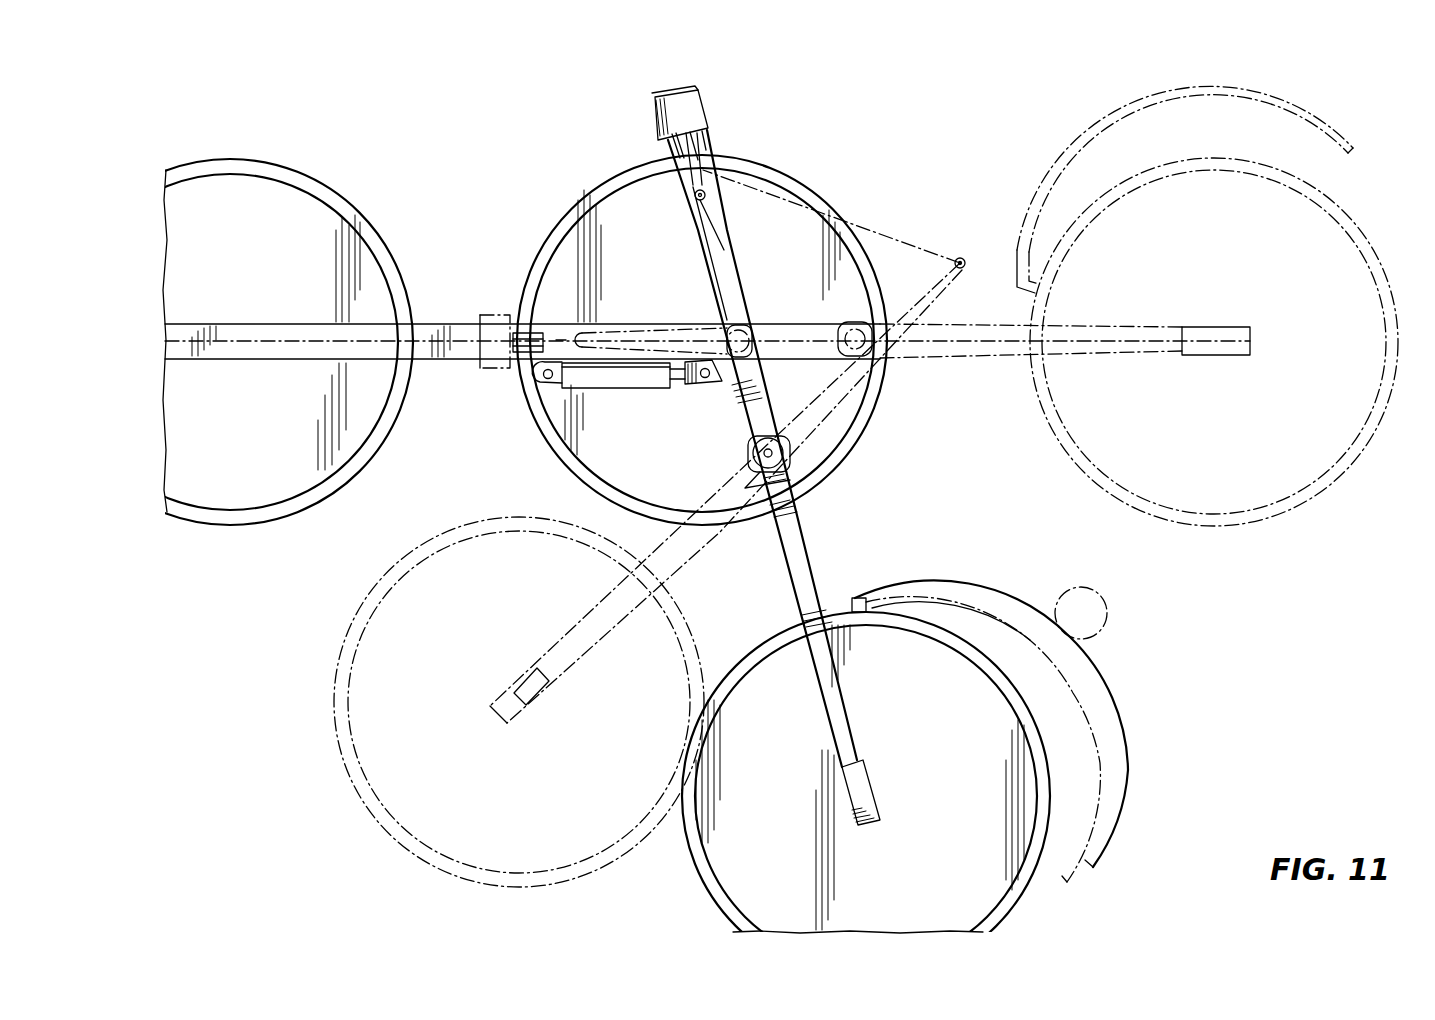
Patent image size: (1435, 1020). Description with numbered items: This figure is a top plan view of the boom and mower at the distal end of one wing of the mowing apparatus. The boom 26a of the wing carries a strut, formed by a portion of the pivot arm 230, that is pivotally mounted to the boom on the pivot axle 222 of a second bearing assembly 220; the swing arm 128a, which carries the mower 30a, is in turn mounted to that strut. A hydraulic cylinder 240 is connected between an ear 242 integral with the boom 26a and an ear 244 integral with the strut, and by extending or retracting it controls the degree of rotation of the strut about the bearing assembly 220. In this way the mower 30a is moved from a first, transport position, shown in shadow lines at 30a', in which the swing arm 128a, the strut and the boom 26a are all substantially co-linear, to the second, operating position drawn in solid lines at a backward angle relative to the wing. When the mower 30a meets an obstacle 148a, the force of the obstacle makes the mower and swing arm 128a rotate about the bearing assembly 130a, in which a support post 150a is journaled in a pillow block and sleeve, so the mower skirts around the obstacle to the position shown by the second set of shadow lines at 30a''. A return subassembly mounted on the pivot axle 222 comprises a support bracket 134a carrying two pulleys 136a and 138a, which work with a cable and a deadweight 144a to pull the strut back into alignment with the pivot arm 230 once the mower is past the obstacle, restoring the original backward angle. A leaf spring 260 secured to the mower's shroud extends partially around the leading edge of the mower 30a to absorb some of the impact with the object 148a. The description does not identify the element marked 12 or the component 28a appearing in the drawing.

The winding apparatus 12 is at (636, 94).
The boom 26a is at (265, 332).
The roll core 28a is at (262, 436).
The mower 30a is at (866, 796).
The transport position of mower 30a' is at (1207, 325).
The obstacle-skirting position of mower 30a'' is at (519, 683).
The swing arm 128a is at (808, 553).
The bearing assembly 130a is at (745, 462).
The support bracket 134a is at (703, 147).
The pulley 136a is at (668, 142).
The pulley 138a is at (695, 167).
The deadweight 144a is at (708, 105).
The obstacle 148a is at (1108, 612).
The support post 150a is at (785, 455).
The second bearing assembly 220 is at (742, 318).
The pivot axle 222 is at (748, 330).
The pivot arm 230 is at (693, 232).
The hydraulic cylinder 240 is at (626, 388).
The ear 242 is at (540, 372).
The ear 244 is at (715, 383).
The leaf spring 260 is at (1122, 698).